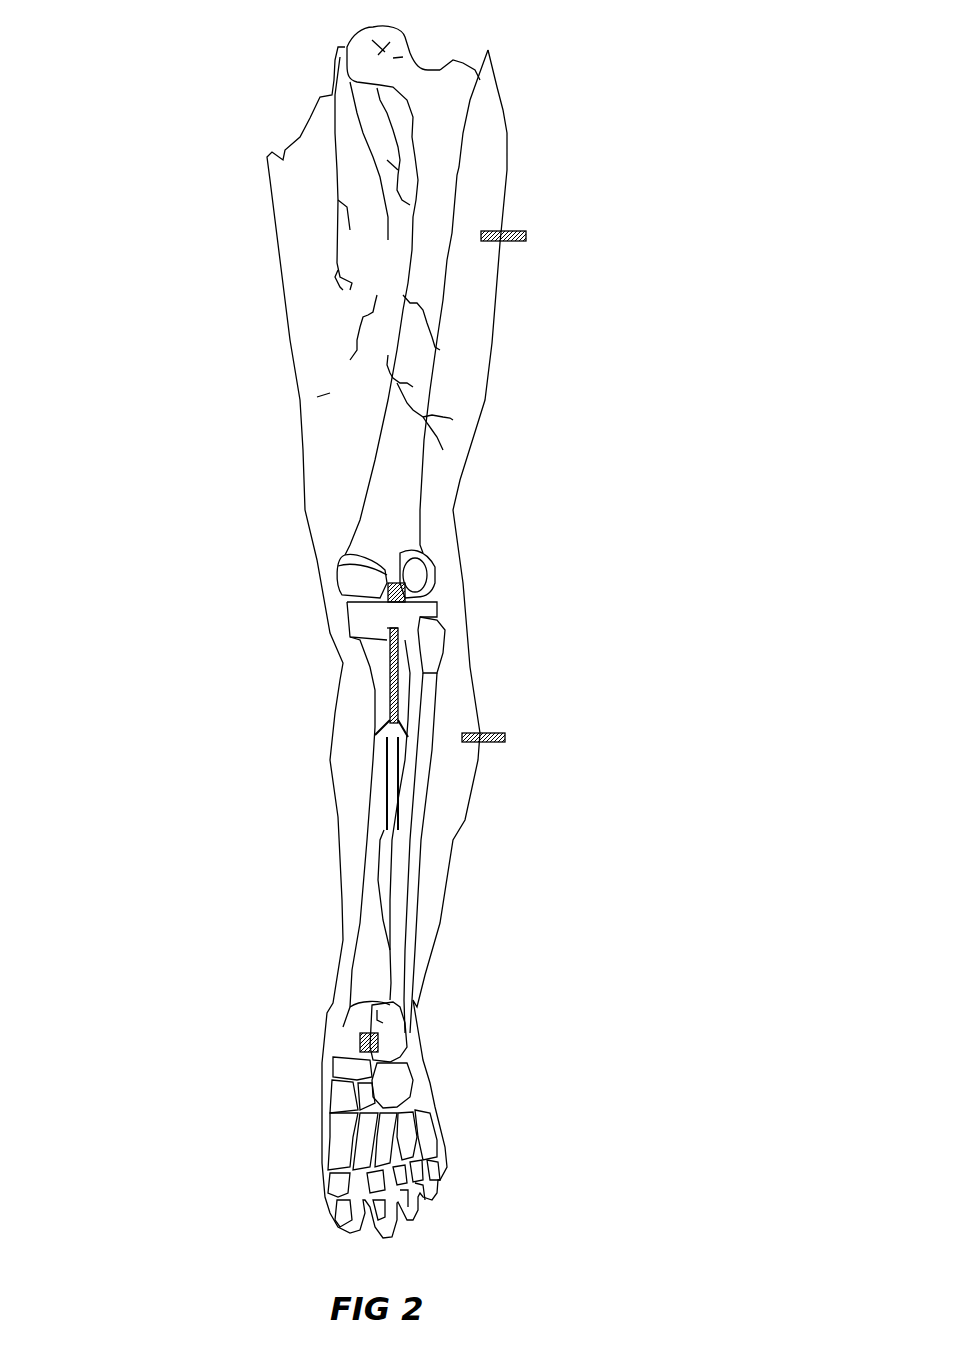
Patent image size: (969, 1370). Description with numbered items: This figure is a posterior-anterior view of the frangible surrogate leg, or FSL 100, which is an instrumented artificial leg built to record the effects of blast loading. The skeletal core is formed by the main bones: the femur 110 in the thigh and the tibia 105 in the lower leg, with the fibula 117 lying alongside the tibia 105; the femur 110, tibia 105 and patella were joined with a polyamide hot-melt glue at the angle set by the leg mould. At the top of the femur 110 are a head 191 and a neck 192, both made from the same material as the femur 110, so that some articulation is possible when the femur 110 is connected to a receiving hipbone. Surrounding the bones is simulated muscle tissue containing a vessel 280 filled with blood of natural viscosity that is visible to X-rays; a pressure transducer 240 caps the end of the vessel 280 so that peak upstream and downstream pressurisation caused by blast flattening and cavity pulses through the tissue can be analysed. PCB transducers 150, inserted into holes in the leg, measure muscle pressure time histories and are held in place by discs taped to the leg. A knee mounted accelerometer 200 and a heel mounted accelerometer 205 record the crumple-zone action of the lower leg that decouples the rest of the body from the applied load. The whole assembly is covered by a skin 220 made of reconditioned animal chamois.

The FSL (frangible surrogate leg) 100 is at (570, 323).
The tibia 105 is at (368, 878).
The femur 110 is at (442, 192).
The fibula 117 is at (407, 907).
The PCB transducers 150 is at (527, 236).
The head 191 is at (377, 50).
The neck 192 is at (423, 68).
The knee mounted accelerometer 200 is at (440, 597).
The heel mounted accelerometer 205 is at (360, 1043).
The skin 220 is at (300, 452).
The pressure transducer 240 is at (387, 687).
The vessel 280 is at (387, 637).